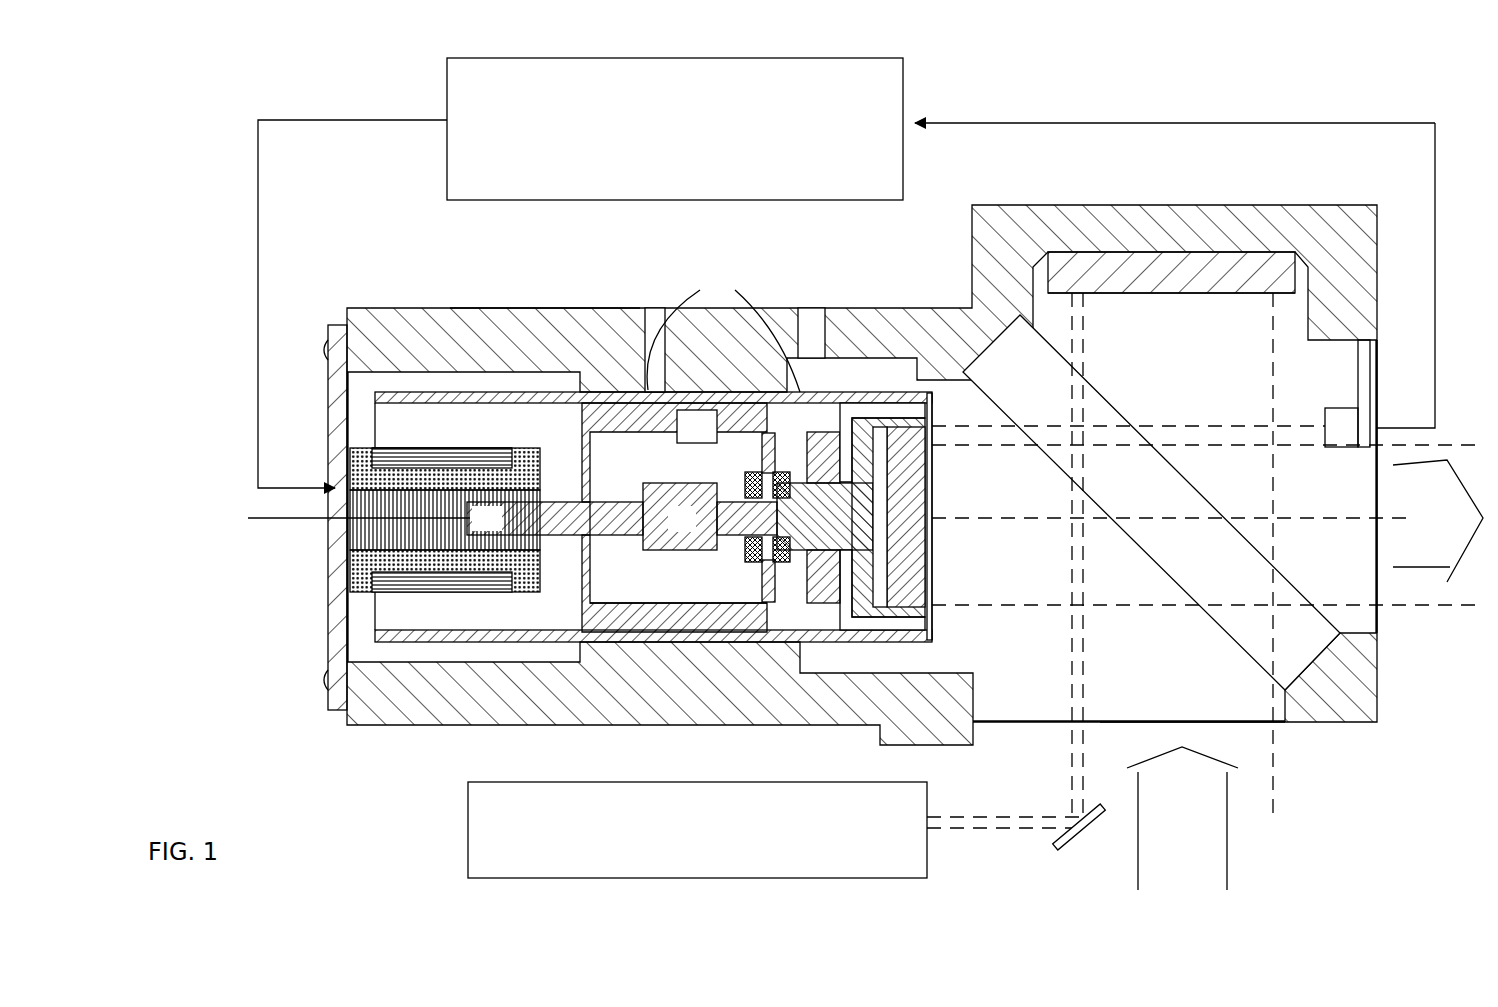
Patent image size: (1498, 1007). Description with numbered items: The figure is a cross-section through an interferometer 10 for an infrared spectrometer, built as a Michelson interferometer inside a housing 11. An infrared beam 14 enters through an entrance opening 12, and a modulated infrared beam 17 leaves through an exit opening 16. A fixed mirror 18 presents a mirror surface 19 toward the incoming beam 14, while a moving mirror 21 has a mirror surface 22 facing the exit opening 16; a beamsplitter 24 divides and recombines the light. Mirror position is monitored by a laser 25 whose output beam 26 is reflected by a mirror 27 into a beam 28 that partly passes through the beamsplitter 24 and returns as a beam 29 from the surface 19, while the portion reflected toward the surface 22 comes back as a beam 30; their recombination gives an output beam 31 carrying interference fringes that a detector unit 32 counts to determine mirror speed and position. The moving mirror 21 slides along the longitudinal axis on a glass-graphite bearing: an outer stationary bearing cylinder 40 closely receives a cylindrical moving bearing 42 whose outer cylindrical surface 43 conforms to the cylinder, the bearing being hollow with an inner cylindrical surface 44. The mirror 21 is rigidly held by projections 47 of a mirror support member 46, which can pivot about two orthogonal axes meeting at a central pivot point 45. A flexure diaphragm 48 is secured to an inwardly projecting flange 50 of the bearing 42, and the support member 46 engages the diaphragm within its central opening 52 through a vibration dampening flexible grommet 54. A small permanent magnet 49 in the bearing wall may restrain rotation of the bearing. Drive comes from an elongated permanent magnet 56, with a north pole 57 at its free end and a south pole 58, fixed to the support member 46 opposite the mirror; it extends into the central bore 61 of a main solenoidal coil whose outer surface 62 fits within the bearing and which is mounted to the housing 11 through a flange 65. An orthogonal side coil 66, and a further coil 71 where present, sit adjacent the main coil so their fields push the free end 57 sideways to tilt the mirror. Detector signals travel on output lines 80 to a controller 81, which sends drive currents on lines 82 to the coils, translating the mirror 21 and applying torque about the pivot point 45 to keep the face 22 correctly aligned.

The interferometer 10 is at (393, 727).
The housing 11 is at (540, 306).
The entrance opening 12 is at (1208, 724).
The beam of infrared light 14 is at (1225, 862).
The exit opening 16 is at (1382, 462).
The exiting beam of infrared light 17 is at (1415, 563).
The fixed mirror 18 is at (1205, 295).
The mirror surface 19 is at (1118, 296).
The moving mirror 21 is at (917, 580).
The mirror surface 22 is at (935, 480).
The beamsplitter 24 is at (1182, 488).
The laser 25 is at (775, 878).
The output beam 26 is at (1000, 815).
The mirror 27 is at (1095, 832).
The beam 28 is at (1085, 655).
The beam 29 is at (1085, 362).
The beam 30 is at (988, 425).
The output beam 31 is at (1265, 425).
The detector unit 32 is at (1340, 417).
The outer stationary bearing cylinder 40 is at (482, 390).
The cylindrical moving bearing 42 is at (645, 632).
The outer cylindrical surface 43 is at (723, 327).
The inner cylindrical surface 44 is at (612, 603).
The central pivot point 45 is at (770, 520).
The mirror support member 46 is at (873, 527).
The projections 47 is at (880, 393).
The flexure diaphragm 48 is at (762, 450).
The small permanent magnet 49 is at (680, 440).
The inwardly projecting flange 50 is at (815, 605).
The central opening 52 is at (745, 480).
The vibration dampening flexible grommet 54 is at (765, 560).
The permanent magnet 56 is at (662, 432).
The north pole 57 is at (470, 520).
The south pole 58 is at (660, 530).
The central bore 61 is at (355, 548).
The outer surface 62 is at (428, 470).
The flange 65 is at (328, 600).
The side coil 66 is at (385, 590).
The coil 71 is at (485, 452).
The output lines 80 is at (1208, 123).
The controller 81 is at (670, 58).
The lines 82 is at (318, 120).